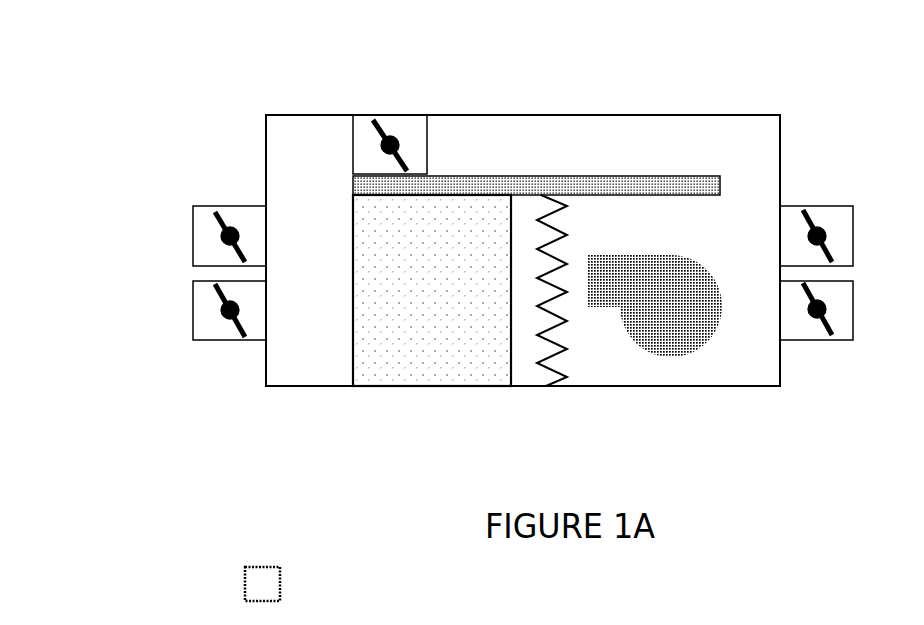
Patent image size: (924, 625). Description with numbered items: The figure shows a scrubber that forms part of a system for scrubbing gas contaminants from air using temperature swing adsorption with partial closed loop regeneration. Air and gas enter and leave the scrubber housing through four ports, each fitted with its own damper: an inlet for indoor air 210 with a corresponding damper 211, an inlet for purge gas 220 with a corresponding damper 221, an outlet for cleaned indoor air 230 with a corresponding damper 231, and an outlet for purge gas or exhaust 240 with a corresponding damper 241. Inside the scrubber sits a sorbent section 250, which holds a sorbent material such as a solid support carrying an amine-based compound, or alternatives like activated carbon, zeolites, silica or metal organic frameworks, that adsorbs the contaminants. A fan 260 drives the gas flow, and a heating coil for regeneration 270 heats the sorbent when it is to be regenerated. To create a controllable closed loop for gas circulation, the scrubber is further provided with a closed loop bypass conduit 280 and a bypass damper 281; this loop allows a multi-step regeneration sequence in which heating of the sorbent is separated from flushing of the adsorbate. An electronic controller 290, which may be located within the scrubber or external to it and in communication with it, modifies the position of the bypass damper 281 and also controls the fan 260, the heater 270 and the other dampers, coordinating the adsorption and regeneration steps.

The inlet for indoor air 210 is at (845, 236).
The damper 211 is at (815, 217).
The inlet for purge gas 220 is at (845, 310).
The damper 221 is at (827, 313).
The outlet for cleaned indoor air 230 is at (193, 236).
The damper 231 is at (225, 230).
The outlet for purge gas 240 is at (187, 310).
The damper 241 is at (227, 320).
The sorbent section 250 is at (432, 290).
The fan 260 is at (654, 306).
The heating coil for regeneration 270 is at (523, 281).
The closed loop bypass conduit 280 is at (536, 163).
The bypass damper 281 is at (381, 130).
The electronic controller 290 is at (268, 578).